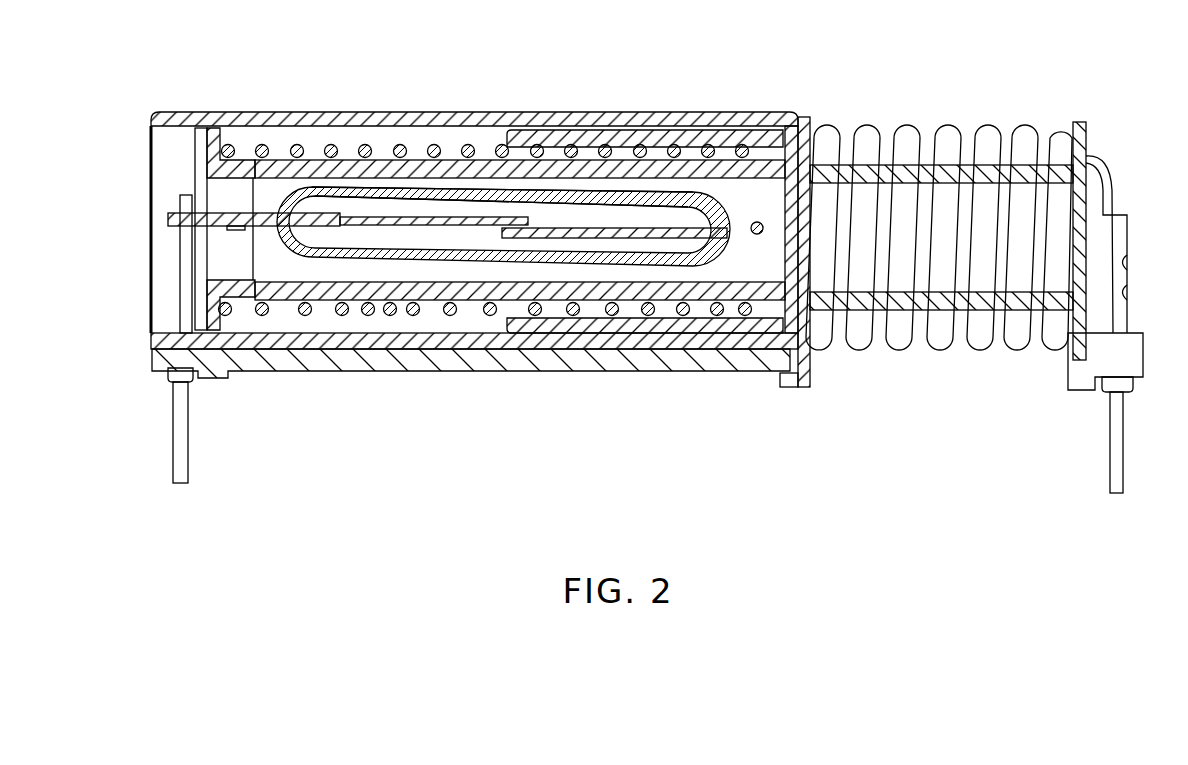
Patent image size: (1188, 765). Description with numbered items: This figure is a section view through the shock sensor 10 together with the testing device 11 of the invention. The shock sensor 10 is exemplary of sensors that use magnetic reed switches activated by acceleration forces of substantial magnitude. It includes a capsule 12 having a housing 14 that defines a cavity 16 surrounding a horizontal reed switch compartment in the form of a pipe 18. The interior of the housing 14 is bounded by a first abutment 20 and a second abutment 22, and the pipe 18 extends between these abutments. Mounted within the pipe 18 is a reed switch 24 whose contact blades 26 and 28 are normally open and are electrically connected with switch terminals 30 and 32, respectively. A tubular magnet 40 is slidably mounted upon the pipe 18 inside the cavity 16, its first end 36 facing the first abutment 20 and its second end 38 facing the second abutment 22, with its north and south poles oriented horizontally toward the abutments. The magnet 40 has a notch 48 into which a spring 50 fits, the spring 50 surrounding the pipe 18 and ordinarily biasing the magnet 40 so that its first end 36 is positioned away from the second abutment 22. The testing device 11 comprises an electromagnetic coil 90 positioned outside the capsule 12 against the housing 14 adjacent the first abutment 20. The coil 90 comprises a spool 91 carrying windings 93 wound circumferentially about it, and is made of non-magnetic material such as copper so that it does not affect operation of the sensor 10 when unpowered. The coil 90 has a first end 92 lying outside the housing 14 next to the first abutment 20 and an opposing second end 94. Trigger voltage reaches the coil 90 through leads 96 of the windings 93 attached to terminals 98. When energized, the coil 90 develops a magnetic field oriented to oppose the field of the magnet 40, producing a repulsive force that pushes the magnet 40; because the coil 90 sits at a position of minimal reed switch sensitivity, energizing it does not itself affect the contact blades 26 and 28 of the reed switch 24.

The shock sensor 10 is at (488, 267).
The testing device 11 is at (982, 263).
The capsule 12 is at (663, 118).
The housing 14 is at (270, 370).
The cavity 16 is at (284, 142).
The pipe 18 is at (352, 302).
The first abutment 20 is at (840, 165).
The second abutment 22 is at (228, 126).
The reed switch 24 is at (503, 243).
The contact blade 26 is at (401, 200).
The contact blade 28 is at (643, 240).
The switch terminal 30 is at (180, 245).
The switch terminal 32 is at (755, 222).
The first end 36 is at (793, 317).
The second end 38 is at (472, 335).
The tubular magnet 40 is at (565, 333).
The notch 48 is at (554, 145).
The spring 50 is at (500, 146).
The electromagnetic coil 90 is at (939, 241).
The spool 91 is at (1068, 350).
The first end 92 is at (810, 118).
The windings 93 is at (914, 125).
The second end 94 is at (1082, 120).
The leads 96 is at (1105, 158).
The terminals 98 is at (1125, 435).